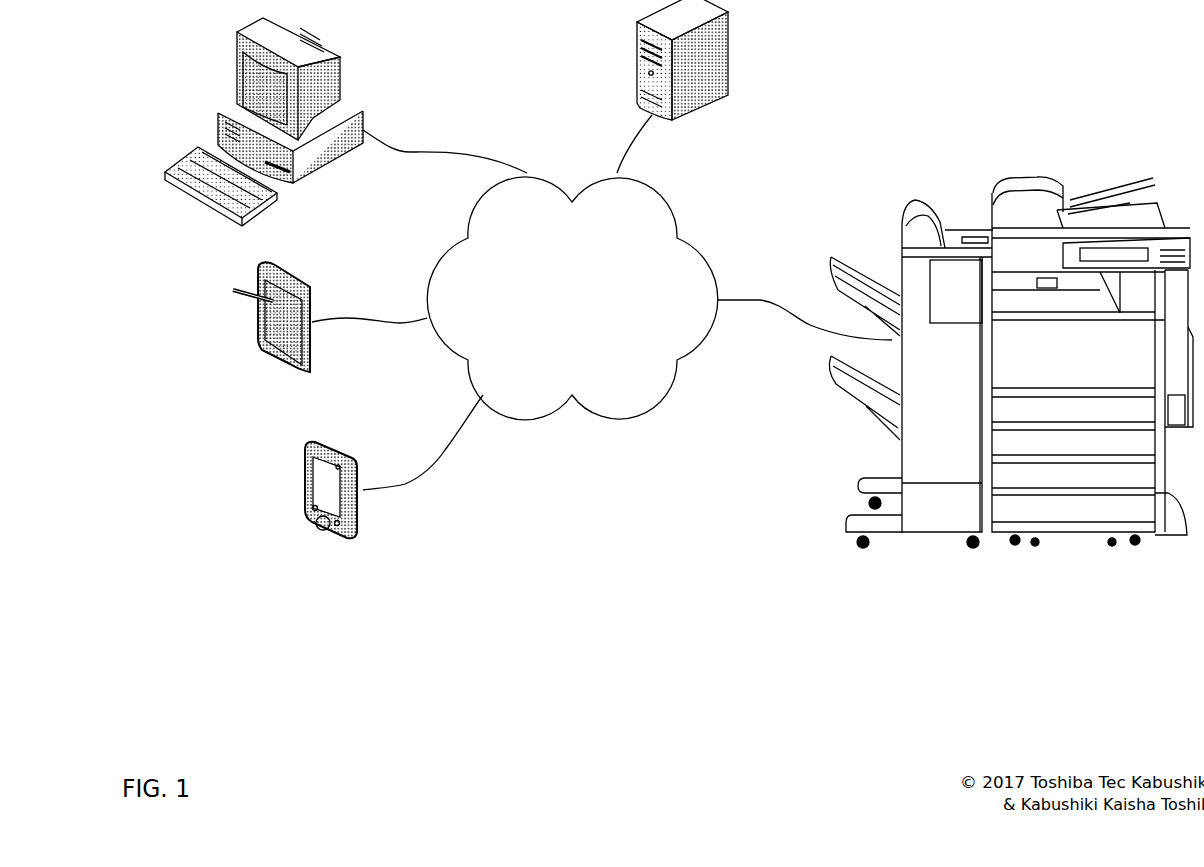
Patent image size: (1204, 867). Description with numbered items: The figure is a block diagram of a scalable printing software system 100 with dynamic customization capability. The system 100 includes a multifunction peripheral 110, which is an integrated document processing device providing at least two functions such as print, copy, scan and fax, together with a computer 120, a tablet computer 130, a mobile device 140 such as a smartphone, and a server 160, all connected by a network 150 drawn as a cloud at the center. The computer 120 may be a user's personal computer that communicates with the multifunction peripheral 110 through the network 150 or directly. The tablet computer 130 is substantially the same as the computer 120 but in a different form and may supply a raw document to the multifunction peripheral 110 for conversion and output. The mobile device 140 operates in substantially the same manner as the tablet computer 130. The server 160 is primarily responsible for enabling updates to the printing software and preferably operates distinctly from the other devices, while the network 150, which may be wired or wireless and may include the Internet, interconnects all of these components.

The scalable printing software system 100 is at (372, 675).
The multifunction peripheral 110 is at (1011, 389).
The computer 120 is at (237, 58).
The tablet computer 130 is at (271, 333).
The mobile device 140 is at (331, 507).
The network 150 is at (572, 298).
The server 160 is at (652, 115).